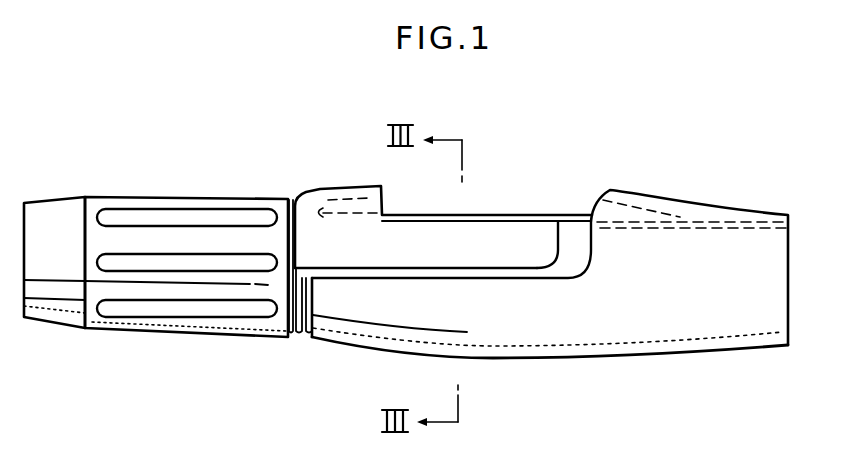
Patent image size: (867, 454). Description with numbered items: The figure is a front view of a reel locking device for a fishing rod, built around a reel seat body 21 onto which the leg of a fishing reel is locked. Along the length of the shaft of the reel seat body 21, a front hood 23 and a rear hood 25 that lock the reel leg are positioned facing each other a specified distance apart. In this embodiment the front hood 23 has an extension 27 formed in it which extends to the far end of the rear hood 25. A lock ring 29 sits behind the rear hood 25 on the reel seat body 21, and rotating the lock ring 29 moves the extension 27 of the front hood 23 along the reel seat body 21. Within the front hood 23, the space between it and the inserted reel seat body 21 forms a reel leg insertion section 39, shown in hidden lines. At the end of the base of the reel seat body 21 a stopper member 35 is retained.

The reel seat body 21 is at (571, 237).
The front hood 23 is at (618, 365).
The rear hood 25 is at (312, 186).
The extension 27 is at (344, 352).
The lock ring 29 is at (125, 323).
The stopper member 35 is at (65, 205).
The reel leg insertion section 39 is at (599, 204).